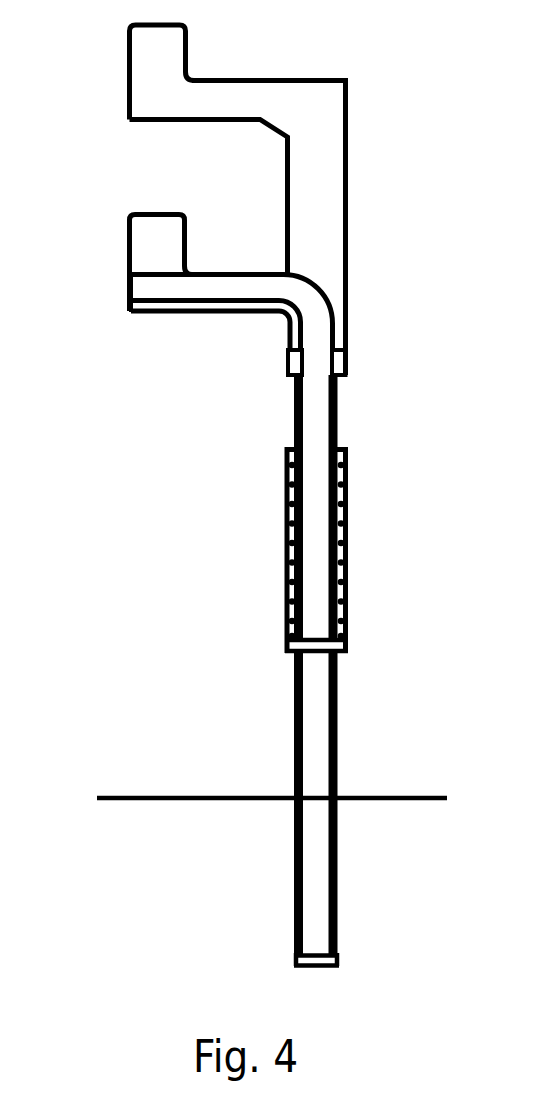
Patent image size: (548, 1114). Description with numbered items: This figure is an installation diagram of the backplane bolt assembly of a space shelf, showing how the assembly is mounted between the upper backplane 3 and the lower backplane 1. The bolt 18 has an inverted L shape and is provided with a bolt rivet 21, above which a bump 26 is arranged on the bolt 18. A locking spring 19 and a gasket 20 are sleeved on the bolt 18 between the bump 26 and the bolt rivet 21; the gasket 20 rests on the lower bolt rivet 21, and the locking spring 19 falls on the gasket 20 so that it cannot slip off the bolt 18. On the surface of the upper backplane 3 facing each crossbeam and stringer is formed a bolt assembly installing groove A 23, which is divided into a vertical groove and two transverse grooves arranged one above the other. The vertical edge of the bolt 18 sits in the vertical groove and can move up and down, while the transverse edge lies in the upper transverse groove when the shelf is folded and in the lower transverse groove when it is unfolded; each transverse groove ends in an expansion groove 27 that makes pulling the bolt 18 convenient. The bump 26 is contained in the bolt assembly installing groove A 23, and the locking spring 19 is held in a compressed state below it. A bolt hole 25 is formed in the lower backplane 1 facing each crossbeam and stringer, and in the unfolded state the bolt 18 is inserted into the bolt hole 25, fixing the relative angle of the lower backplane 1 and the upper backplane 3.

The lower backplane 1 is at (137, 845).
The upper backplane 3 is at (128, 633).
The bolt 18 is at (313, 322).
The locking spring 19 is at (345, 482).
The gasket 20 is at (345, 628).
The bolt rivet 21 is at (343, 645).
The bolt assembly installing groove A 23 is at (313, 220).
The bolt hole 25 is at (335, 952).
The bump 26 is at (345, 353).
The expansion groove 27 is at (151, 48).